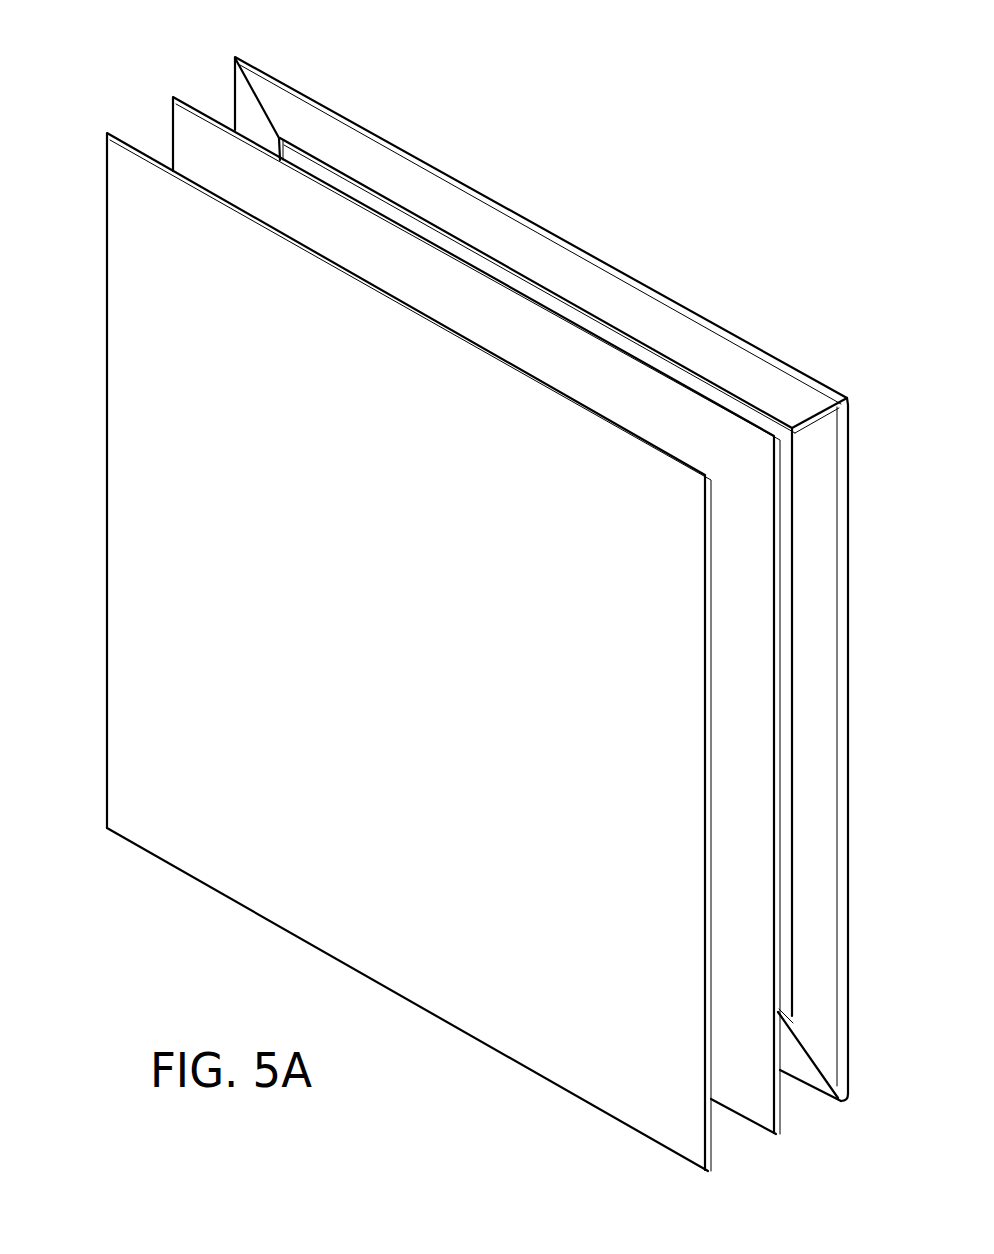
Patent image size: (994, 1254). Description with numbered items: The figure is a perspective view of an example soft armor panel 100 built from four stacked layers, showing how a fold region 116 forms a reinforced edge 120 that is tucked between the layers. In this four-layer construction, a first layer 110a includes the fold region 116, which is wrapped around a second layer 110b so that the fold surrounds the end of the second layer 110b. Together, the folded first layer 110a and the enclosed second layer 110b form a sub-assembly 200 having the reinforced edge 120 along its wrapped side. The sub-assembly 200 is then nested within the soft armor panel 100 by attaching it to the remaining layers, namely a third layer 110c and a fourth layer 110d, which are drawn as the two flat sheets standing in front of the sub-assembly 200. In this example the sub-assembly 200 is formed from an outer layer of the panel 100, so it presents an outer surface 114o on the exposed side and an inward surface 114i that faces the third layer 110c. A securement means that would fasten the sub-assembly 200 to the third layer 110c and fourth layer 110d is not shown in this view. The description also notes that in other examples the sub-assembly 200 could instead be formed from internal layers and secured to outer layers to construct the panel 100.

The soft armor panel 100 is at (766, 49).
The sub-assembly 200 is at (265, 23).
The first layer 110a is at (852, 445).
The second layer 110b is at (489, 258).
The third layer 110c is at (171, 116).
The fourth layer 110d is at (106, 197).
The fold region 116 is at (620, 298).
The reinforced edge 120 is at (620, 298).
The outer surface 114o is at (855, 600).
The inward surface 114i is at (835, 694).